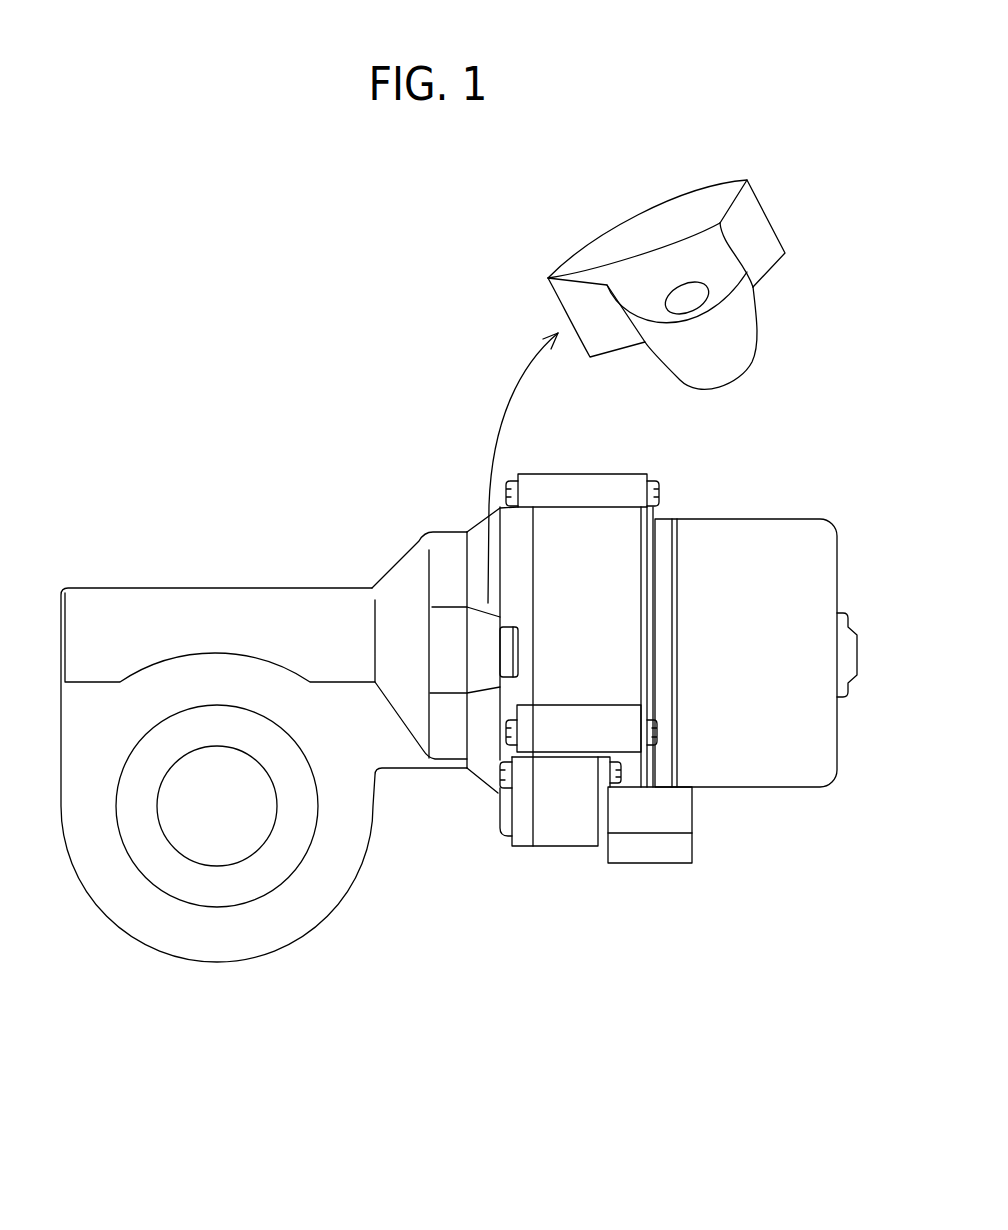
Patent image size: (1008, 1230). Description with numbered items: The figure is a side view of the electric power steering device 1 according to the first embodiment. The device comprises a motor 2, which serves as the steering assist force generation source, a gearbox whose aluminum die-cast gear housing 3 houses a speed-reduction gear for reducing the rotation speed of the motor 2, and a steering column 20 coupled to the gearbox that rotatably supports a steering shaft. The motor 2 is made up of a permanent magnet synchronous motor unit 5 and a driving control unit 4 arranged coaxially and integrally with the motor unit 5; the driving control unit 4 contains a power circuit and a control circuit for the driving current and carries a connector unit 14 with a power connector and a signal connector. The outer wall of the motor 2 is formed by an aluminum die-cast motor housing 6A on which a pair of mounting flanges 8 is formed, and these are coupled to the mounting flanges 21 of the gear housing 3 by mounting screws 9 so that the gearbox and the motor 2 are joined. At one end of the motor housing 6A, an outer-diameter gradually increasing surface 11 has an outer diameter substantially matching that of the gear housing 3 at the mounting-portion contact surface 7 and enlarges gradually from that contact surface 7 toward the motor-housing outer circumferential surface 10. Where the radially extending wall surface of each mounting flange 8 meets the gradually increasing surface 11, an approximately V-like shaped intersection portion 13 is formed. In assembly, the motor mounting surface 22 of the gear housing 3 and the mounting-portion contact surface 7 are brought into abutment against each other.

The electric power steering device 1 is at (465, 925).
The motor 2 is at (547, 918).
The gear housing 3 is at (447, 540).
The driving control unit 4 is at (595, 528).
The motor unit 5 is at (745, 533).
The motor housing 6A is at (603, 548).
The mounting-portion contact surface 7 is at (463, 738).
The mounting flanges 8 is at (698, 268).
The mounting screws 9 is at (518, 630).
The motor-housing outer circumferential surface 10 is at (525, 553).
The outer-diameter gradually increasing surface 11 is at (750, 227).
The intersection portion 13 is at (740, 260).
The connector unit 14 is at (575, 835).
The steering column 20 is at (217, 623).
The mounting flanges 21 is at (443, 672).
The motor mounting surface 22 is at (475, 545).